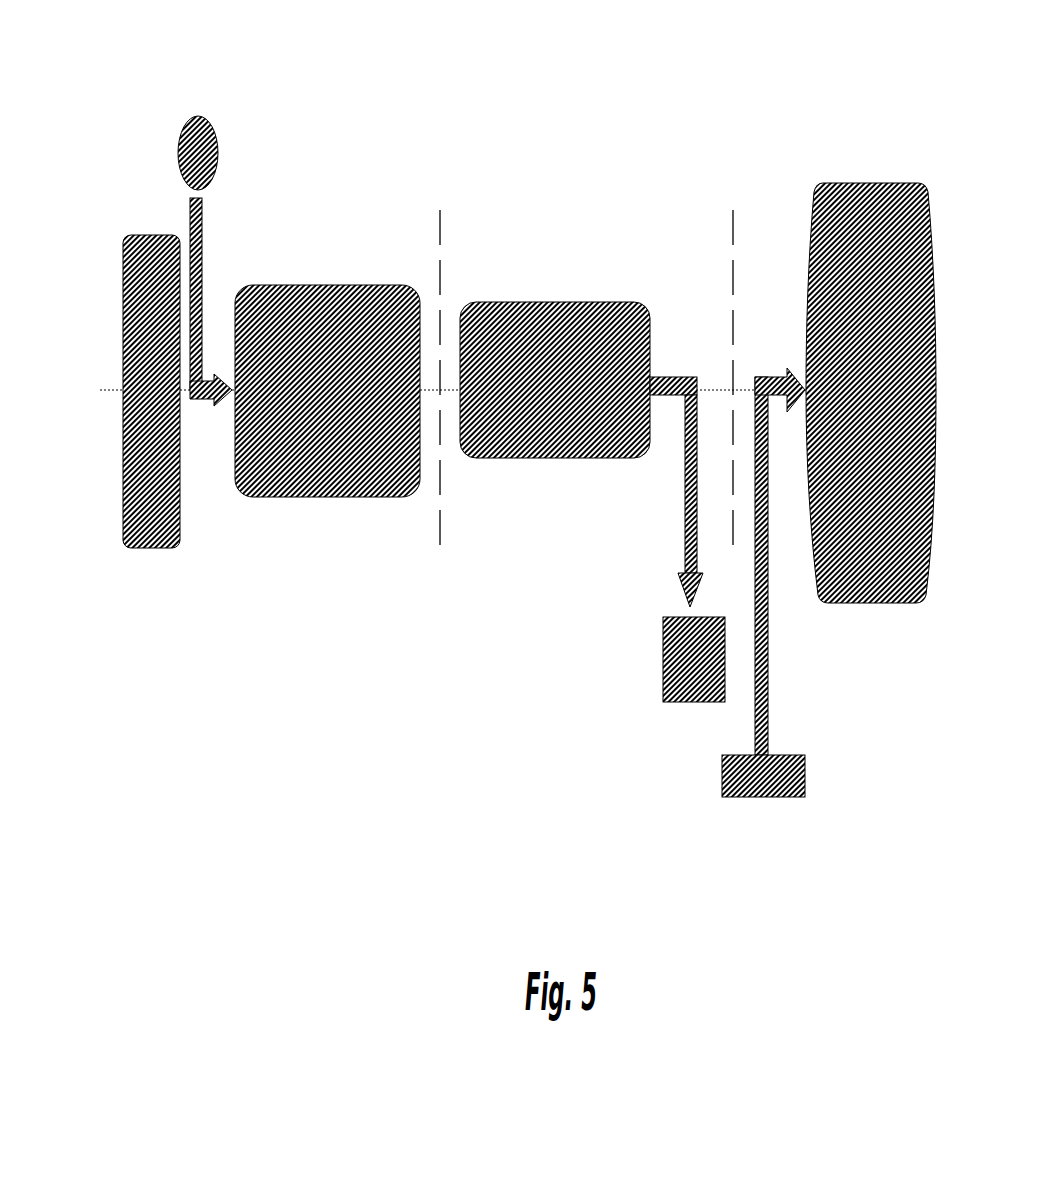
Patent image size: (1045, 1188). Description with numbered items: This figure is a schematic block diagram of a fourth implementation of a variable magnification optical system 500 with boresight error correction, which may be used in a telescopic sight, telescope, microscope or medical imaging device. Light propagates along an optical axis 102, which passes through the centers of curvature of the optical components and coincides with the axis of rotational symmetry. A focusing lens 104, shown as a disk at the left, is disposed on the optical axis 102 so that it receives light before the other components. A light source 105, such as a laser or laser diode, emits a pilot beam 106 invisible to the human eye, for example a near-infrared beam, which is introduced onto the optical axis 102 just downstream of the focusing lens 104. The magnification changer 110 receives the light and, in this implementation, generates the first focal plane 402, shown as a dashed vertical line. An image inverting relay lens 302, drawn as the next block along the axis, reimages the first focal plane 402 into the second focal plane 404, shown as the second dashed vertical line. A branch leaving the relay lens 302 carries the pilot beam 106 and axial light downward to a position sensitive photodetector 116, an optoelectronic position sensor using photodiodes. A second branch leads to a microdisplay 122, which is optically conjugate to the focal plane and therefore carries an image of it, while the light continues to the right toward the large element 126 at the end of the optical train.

The variable magnification optical system 500 is at (173, 78).
The optical axis 102 is at (95, 385).
The focusing lens 104 is at (152, 552).
The light source 105 is at (220, 152).
The pilot beam 106 is at (208, 242).
The magnification changer 110 is at (343, 283).
The first focal plane 402 is at (438, 560).
The image inverting relay lens 302 is at (553, 300).
The position sensitive photodetector 116 is at (660, 662).
The second focal plane 404 is at (734, 210).
The microdisplay 122 is at (810, 795).
The output disk 126 is at (865, 180).